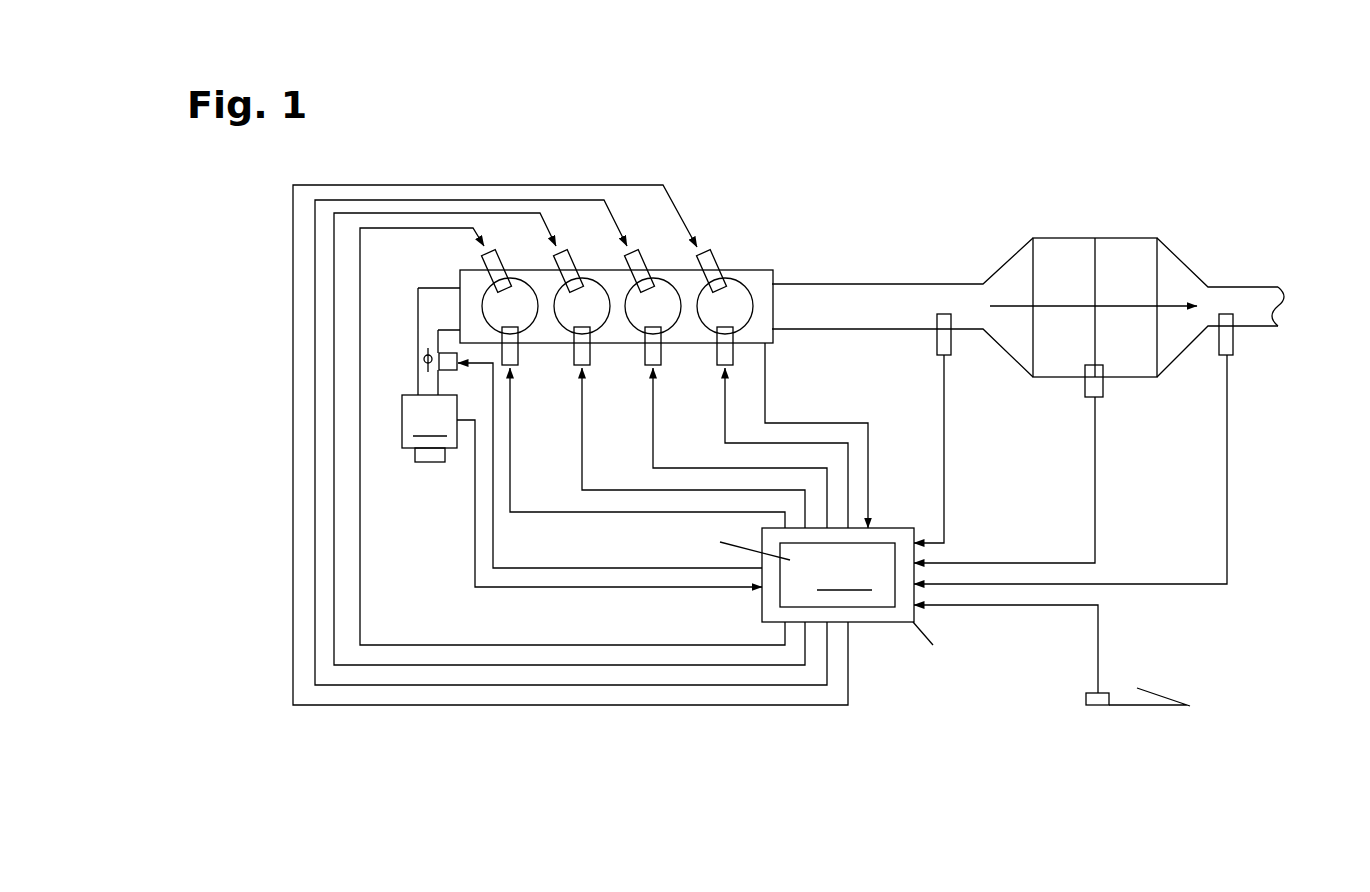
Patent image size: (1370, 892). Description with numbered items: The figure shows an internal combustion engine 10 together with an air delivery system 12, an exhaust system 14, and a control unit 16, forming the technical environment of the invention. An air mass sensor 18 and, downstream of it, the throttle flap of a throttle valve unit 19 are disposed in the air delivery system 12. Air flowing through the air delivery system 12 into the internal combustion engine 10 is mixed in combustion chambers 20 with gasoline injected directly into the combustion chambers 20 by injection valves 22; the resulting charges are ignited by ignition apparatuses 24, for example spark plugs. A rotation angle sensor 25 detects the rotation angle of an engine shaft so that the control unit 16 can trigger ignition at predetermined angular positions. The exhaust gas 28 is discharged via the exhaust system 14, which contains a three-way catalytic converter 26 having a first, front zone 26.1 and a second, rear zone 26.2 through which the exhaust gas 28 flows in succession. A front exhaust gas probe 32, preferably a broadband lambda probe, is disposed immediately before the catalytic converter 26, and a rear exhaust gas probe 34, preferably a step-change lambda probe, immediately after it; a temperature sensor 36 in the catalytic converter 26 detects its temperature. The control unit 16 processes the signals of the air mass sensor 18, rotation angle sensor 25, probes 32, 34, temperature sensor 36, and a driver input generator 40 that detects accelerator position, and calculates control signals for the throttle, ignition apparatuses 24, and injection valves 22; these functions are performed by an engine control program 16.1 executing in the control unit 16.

The internal combustion engine 10 is at (783, 238).
The air delivery system 12 is at (428, 484).
The exhaust system 14 is at (1288, 450).
The control unit 16 is at (900, 622).
The engine control program 16.1 is at (757, 565).
The air mass sensor 18 is at (582, 437).
The throttle valve unit 19 is at (446, 356).
The combustion chambers 20 is at (735, 287).
The injection valves 22 is at (725, 352).
The ignition apparatuses 24 is at (710, 270).
The rotation angle sensor 25 is at (768, 347).
The catalytic converter 26 is at (1033, 410).
The first zone 26.1 is at (1047, 248).
The second zone 26.2 is at (1145, 250).
The exhaust gas 28 is at (1105, 308).
The front exhaust gas probe 32 is at (945, 352).
The rear exhaust gas probe 34 is at (1232, 340).
The temperature sensor 36 is at (1100, 386).
The driver input generator 40 is at (1093, 708).